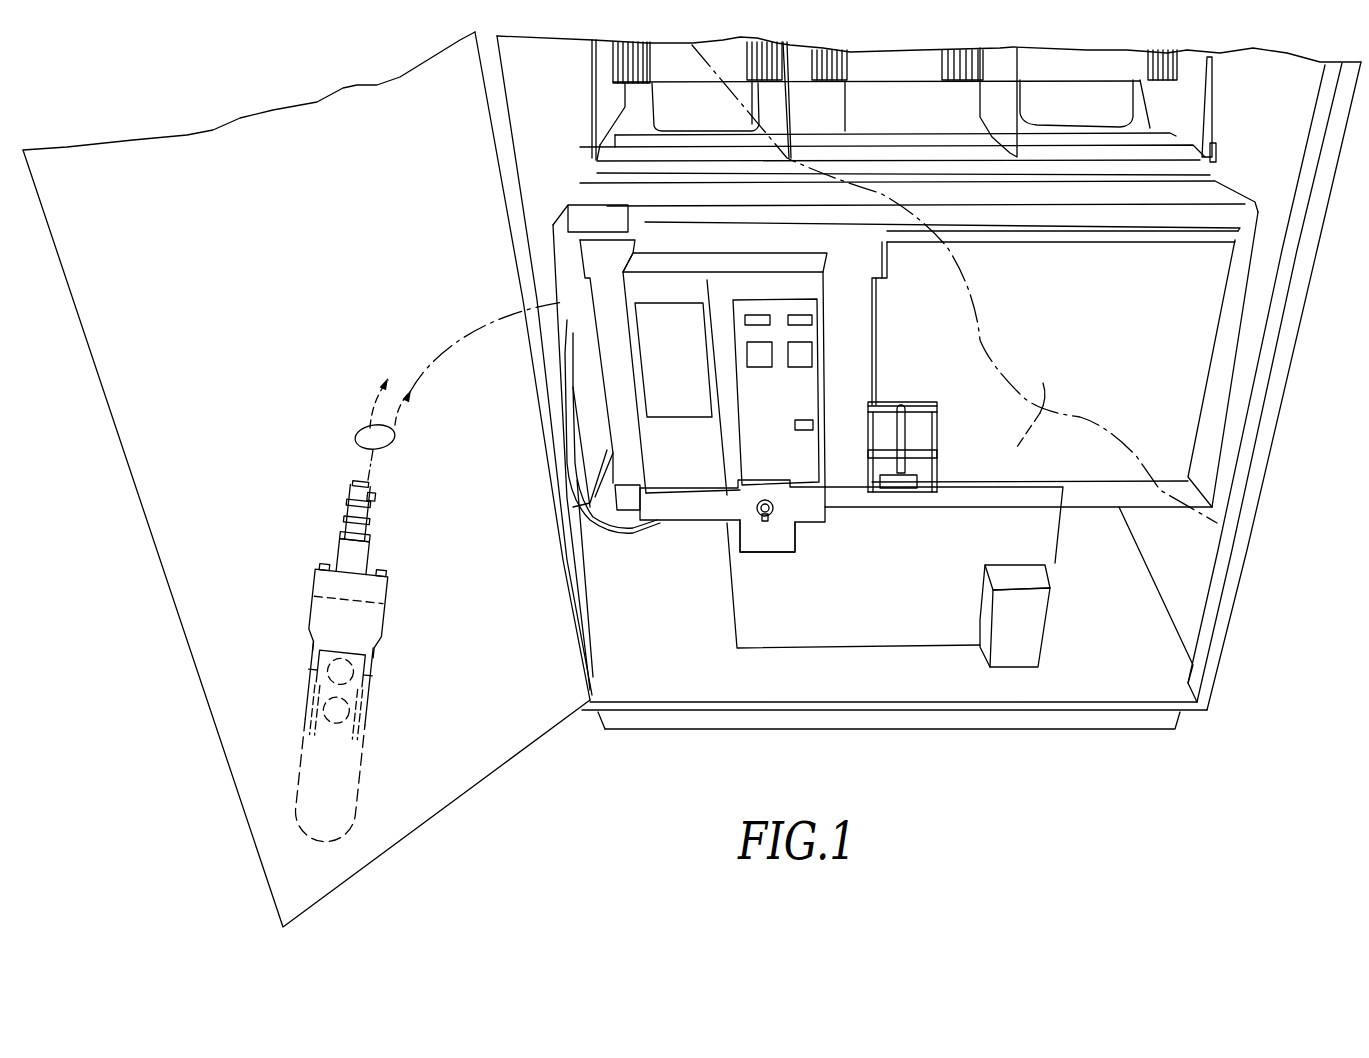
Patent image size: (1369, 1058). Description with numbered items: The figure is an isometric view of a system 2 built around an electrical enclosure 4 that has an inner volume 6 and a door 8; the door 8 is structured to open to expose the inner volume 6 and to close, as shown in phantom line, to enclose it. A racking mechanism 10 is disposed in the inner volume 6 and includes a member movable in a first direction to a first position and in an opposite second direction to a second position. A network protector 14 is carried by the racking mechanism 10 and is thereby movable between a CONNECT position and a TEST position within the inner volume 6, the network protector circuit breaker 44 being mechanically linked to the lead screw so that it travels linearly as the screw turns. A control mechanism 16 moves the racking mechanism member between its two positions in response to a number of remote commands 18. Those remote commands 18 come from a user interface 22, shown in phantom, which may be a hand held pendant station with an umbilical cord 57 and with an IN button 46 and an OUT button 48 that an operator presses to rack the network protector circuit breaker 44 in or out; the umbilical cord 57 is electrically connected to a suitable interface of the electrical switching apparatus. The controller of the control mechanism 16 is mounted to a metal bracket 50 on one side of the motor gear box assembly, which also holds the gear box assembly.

The system 2 is at (1289, 719).
The electrical enclosure 4 is at (1275, 432).
The inner volume 6 is at (1200, 582).
The door 8 is at (186, 550).
The racking mechanism 10 is at (730, 502).
The network protector 14 is at (810, 390).
The control mechanism 16 is at (755, 543).
The remote commands 18 is at (370, 430).
The user interface 22 is at (338, 813).
The network protector circuit breaker 44 is at (733, 332).
The IN button 46 is at (347, 668).
The OUT button 48 is at (342, 705).
The metal bracket 50 is at (800, 507).
The umbilical cord 57 is at (478, 320).